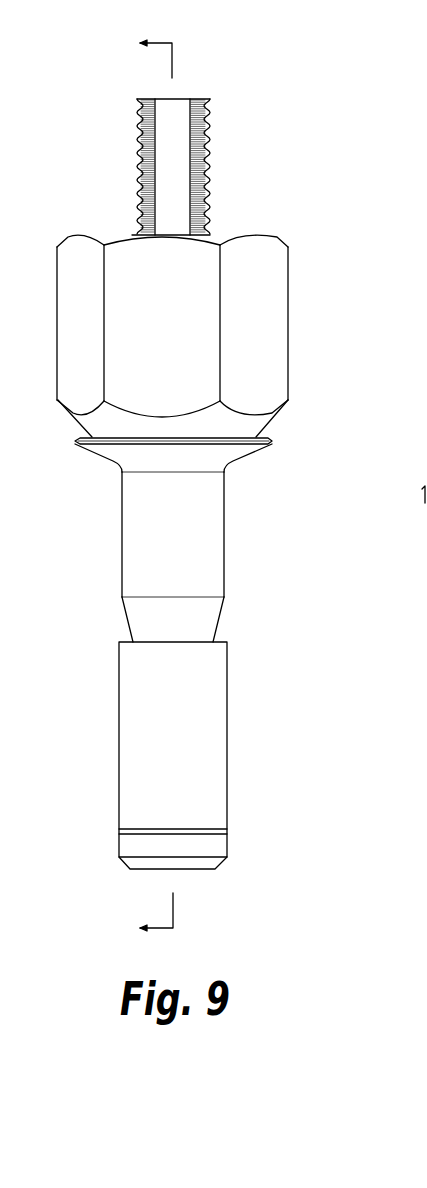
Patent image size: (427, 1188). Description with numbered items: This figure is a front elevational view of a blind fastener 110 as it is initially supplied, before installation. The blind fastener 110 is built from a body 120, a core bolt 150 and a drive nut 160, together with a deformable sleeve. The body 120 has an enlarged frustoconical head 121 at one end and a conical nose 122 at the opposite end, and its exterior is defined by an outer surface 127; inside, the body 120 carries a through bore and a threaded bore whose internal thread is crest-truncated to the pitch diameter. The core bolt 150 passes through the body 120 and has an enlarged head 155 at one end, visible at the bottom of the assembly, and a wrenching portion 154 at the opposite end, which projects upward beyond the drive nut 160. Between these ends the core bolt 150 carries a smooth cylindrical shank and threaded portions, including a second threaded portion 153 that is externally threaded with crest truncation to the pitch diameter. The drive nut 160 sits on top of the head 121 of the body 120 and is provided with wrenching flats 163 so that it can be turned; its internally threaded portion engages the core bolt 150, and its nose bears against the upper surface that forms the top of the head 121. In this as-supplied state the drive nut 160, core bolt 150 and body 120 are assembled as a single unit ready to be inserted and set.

The blind fastener 110 is at (228, 60).
The body 120 is at (133, 545).
The enlarged frustoconical head 121 is at (97, 455).
The conical nose 122 is at (220, 620).
The outer surface 127 is at (118, 568).
The core bolt 150 is at (130, 842).
The second threaded portion 153 is at (205, 152).
The wrenching portion 154 is at (162, 150).
The enlarged head 155 is at (210, 843).
The drive nut 160 is at (75, 342).
The wrenching flats 163 is at (265, 323).